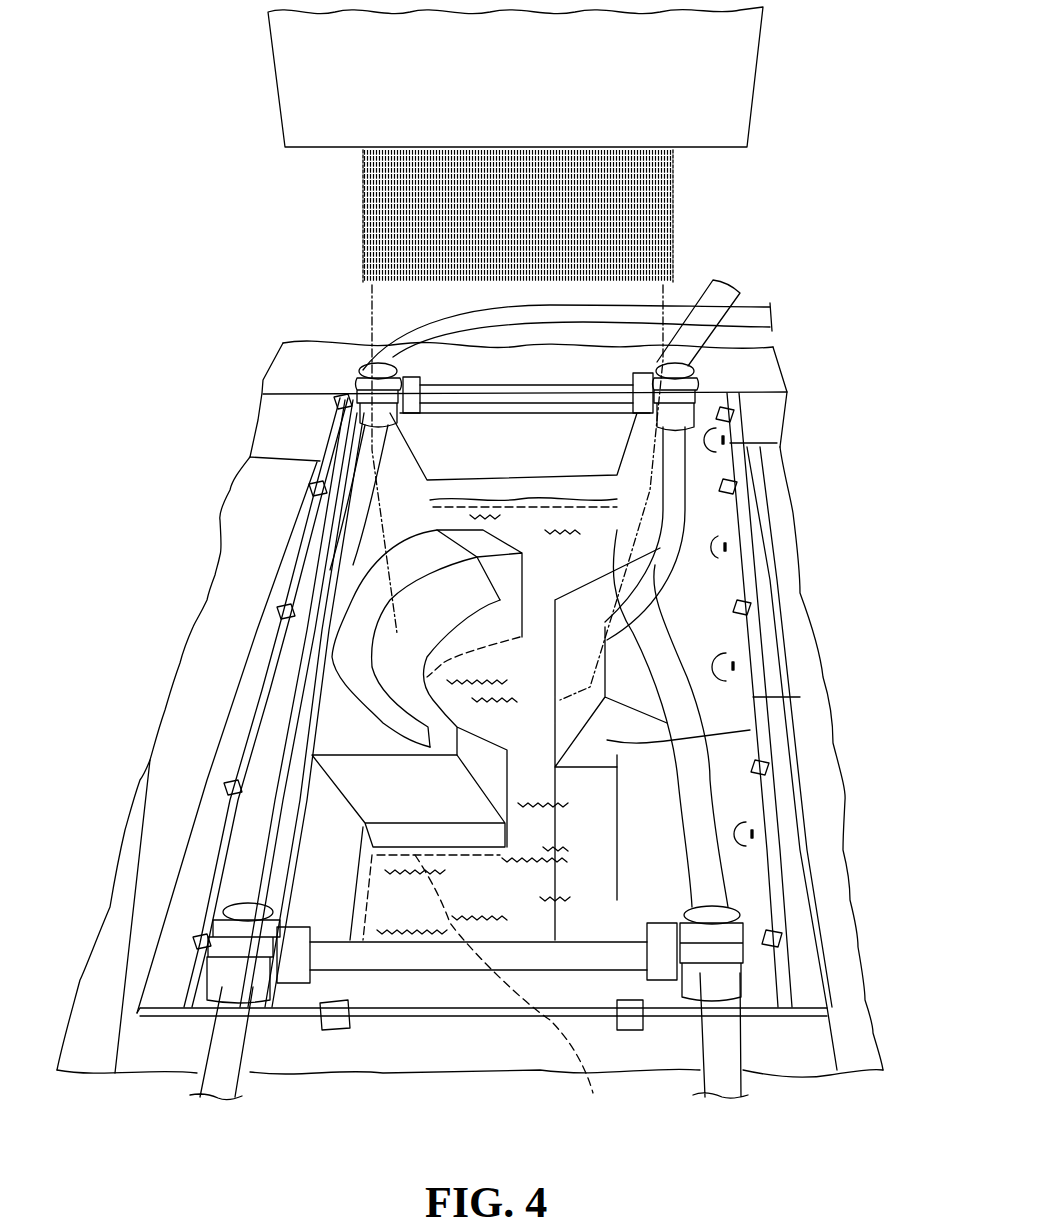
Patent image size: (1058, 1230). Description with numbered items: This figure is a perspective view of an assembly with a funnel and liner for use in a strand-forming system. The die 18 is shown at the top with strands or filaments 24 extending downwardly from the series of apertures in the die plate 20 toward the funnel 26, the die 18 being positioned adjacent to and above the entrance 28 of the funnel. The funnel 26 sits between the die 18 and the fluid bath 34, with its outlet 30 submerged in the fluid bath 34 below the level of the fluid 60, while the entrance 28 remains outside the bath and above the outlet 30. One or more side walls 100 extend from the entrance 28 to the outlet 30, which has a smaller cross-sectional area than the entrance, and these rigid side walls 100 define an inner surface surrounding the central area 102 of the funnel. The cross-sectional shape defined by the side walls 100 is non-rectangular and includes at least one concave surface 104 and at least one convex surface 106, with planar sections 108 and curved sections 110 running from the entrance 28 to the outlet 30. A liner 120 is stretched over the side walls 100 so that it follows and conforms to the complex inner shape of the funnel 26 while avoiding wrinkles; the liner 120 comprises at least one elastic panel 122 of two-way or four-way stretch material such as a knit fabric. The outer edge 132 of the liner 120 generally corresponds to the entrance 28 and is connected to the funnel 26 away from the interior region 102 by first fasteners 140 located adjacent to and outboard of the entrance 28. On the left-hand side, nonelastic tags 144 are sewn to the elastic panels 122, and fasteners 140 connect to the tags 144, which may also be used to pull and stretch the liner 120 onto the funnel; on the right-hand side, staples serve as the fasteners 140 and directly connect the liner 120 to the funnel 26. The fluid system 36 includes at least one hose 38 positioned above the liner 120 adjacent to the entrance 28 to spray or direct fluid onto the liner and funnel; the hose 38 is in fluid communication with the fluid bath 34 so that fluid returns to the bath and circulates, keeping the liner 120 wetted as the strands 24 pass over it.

The die 18 is at (587, 77).
The die plate 20 is at (752, 77).
The strands or filaments 24 is at (397, 218).
The funnel 26 is at (386, 695).
The entrance 28 is at (365, 823).
The outlet 30 is at (509, 992).
The fluid bath 34 is at (710, 853).
The fluid system 36 is at (526, 700).
The hose 38 is at (340, 523).
The fluid 60 is at (580, 880).
The side walls 100 is at (417, 782).
The central area 102 is at (562, 548).
The concave surface 104 is at (496, 718).
The convex surface 106 is at (750, 730).
The planar section 108 is at (523, 433).
The curved section 110 is at (435, 662).
The liner 120 is at (722, 633).
The elastic panel 122 is at (600, 600).
The outer edge 132 is at (753, 697).
The first fastener 140 is at (730, 440).
The tag 144 is at (317, 480).